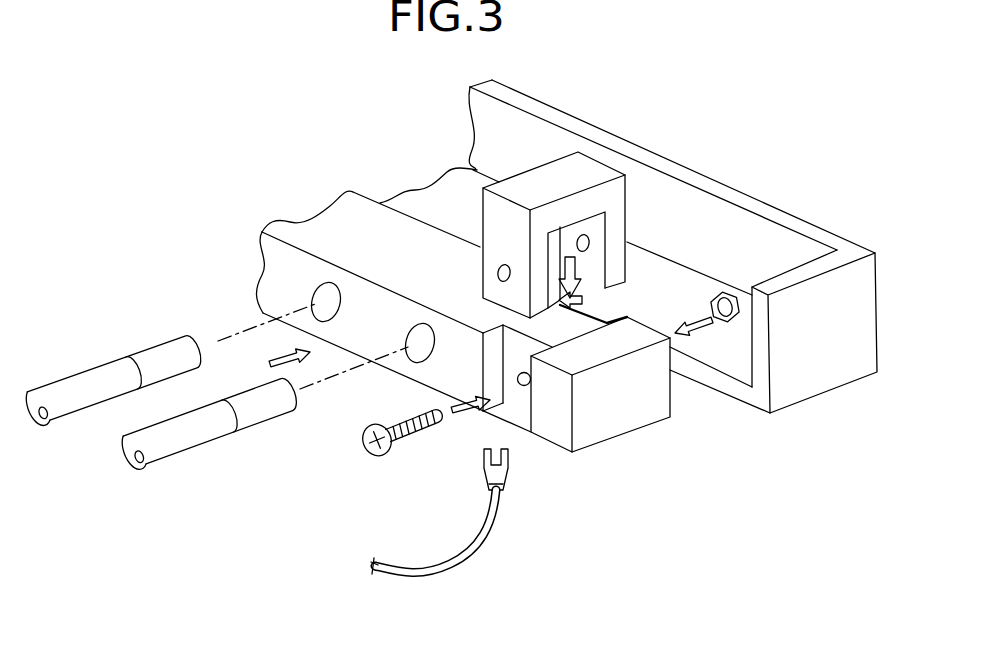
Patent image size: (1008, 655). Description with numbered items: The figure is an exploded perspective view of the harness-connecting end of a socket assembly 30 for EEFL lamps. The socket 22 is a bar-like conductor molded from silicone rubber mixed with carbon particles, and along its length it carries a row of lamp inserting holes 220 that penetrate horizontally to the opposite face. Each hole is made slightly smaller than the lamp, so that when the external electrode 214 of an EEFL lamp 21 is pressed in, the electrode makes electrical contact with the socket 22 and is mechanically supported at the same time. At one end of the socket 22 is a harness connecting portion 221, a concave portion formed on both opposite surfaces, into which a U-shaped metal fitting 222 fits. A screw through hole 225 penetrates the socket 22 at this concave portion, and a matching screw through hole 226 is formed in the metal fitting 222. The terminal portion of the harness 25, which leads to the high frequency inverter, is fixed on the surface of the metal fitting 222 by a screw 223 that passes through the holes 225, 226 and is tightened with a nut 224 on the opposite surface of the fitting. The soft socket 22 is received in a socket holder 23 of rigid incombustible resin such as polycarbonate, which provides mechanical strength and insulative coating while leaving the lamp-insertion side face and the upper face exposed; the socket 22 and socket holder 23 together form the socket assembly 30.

The EEFL lamp 21 is at (90, 380).
The external electrode 214 is at (163, 348).
The socket 22 is at (648, 417).
The socket holder 23 is at (782, 402).
The harness 25 is at (475, 570).
The socket assembly 30 is at (797, 470).
The lamp inserting hole 220 is at (417, 327).
The harness connecting portion 221 is at (517, 398).
The metal fitting 222 is at (620, 192).
The screw 223 is at (405, 443).
The nut 224 is at (733, 297).
The screw through hole 225 is at (518, 385).
The screw through hole 226 is at (498, 272).